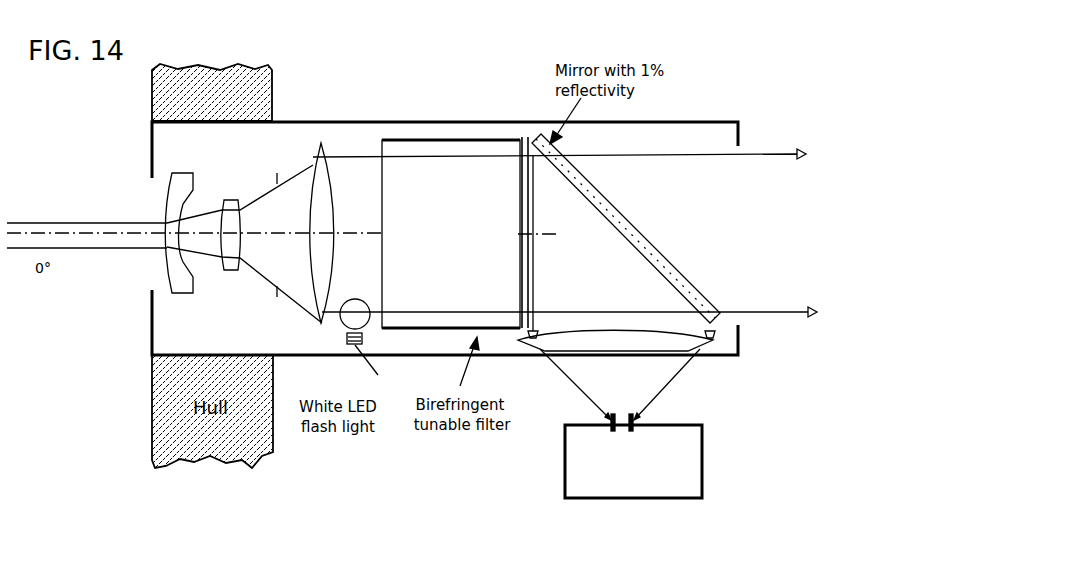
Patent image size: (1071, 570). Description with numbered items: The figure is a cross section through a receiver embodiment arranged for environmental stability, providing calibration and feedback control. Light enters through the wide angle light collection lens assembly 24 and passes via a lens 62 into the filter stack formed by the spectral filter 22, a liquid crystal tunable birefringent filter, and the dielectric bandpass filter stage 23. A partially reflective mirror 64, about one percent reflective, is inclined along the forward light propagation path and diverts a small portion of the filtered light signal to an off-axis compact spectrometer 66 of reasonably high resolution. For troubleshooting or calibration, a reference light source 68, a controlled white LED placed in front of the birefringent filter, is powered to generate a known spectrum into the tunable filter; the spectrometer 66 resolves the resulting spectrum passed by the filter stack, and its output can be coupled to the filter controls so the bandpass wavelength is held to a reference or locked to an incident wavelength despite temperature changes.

The spectral filter 22 is at (425, 148).
The dielectric bandpass filter stage 23 is at (522, 160).
The wide angle light collection lens assembly 24 is at (287, 224).
The lens 62 is at (328, 166).
The partially reflective mirror 64 is at (627, 243).
The spectrometer 66 is at (668, 437).
The reference light source 68 is at (349, 317).